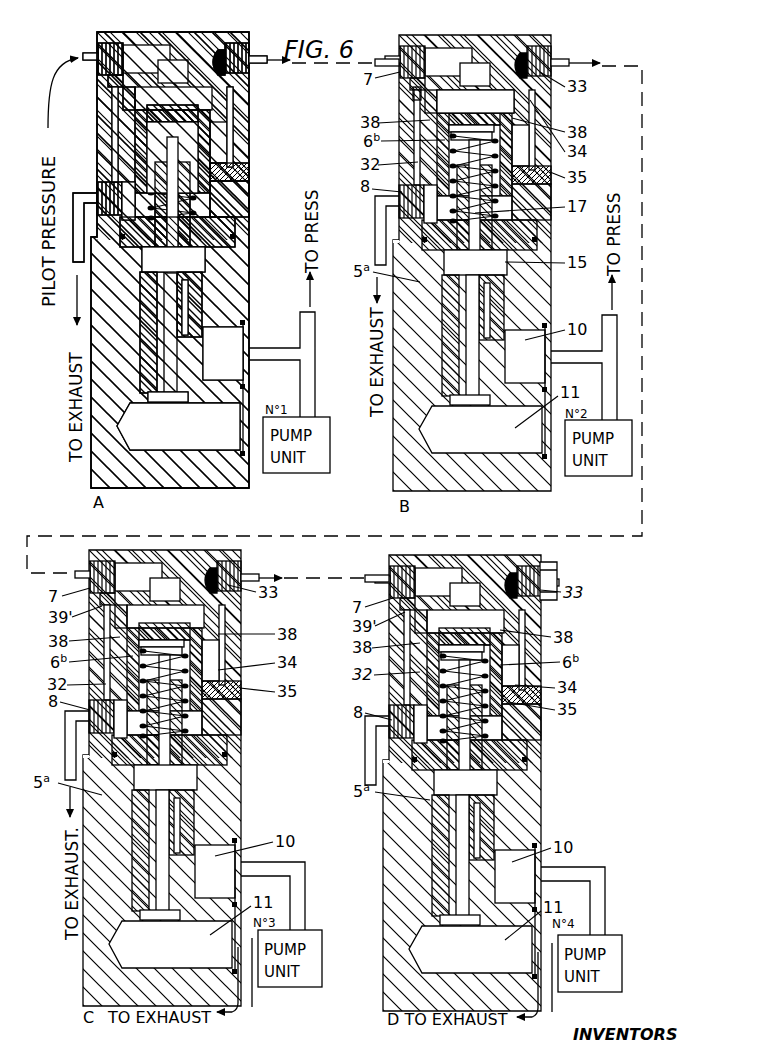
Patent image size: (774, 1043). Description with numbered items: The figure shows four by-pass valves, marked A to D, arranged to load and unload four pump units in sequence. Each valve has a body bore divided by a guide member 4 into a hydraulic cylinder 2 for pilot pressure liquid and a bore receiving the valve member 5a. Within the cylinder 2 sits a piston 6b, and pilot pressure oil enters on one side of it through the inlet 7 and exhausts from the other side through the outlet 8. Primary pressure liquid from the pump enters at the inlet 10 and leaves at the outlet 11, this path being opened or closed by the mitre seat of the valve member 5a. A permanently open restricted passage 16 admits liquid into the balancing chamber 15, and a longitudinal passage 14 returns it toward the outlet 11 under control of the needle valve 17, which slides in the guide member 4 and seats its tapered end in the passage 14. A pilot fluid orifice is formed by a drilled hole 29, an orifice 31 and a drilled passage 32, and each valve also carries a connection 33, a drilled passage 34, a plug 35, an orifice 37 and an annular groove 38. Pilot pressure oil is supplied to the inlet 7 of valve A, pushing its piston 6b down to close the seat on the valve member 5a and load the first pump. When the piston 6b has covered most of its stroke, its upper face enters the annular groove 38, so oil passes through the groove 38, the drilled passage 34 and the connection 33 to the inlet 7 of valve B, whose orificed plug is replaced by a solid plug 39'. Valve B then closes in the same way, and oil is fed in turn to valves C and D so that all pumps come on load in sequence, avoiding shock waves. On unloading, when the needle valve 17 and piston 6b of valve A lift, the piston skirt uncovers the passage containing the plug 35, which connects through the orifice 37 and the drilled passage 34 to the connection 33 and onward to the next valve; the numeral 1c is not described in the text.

The inlet 7 is at (98, 50).
The drilled hole 29 is at (110, 80).
The orifice 31 is at (125, 92).
The annular groove 38 is at (150, 117).
The piston 6b is at (142, 138).
The drilled passage 32 is at (115, 155).
The outlet 8 is at (100, 188).
The valve member 5a is at (100, 274).
The valve unit 1c is at (166, 260).
The connection 33 is at (240, 70).
The drilled passage 34 is at (230, 98).
The plug 35 is at (247, 170).
The orifice 37 is at (248, 187).
The needle valve 17 is at (175, 210).
The guide member 4 is at (215, 229).
The balancing chamber 15 is at (205, 260).
The passage 16 is at (195, 285).
The longitudinal passage 14 is at (168, 317).
The inlet 10 is at (232, 340).
The outlet 11 is at (213, 427).
The hydraulic cylinder 2 is at (503, 102).
The solid plug 39' is at (392, 98).